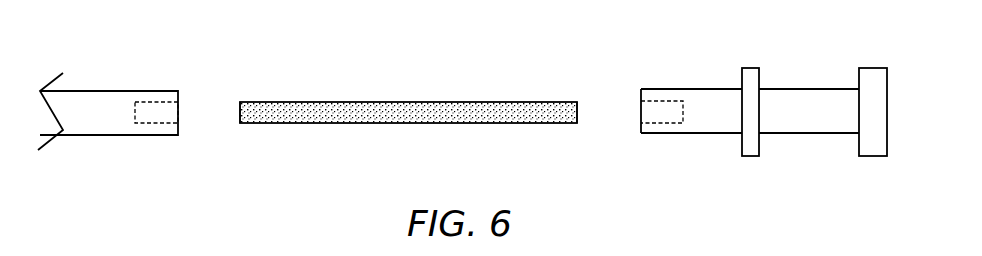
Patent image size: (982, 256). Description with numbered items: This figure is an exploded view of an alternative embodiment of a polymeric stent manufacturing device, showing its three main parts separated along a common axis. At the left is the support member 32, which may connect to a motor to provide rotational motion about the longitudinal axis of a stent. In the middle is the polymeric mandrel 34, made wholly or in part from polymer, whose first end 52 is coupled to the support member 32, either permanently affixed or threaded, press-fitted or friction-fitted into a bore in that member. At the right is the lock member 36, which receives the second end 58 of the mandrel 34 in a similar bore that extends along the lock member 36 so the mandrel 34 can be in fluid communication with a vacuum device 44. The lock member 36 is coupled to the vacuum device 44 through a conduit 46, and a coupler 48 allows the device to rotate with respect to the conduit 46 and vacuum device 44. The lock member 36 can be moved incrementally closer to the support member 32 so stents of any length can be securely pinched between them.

The support member 32 is at (120, 91).
The polymeric mandrel 34 is at (460, 102).
The lock member 36 is at (692, 89).
The vacuum device 44 is at (877, 68).
The conduit 46 is at (808, 89).
The coupler 48 is at (753, 68).
The first end 52 is at (240, 102).
The second end 58 is at (576, 102).